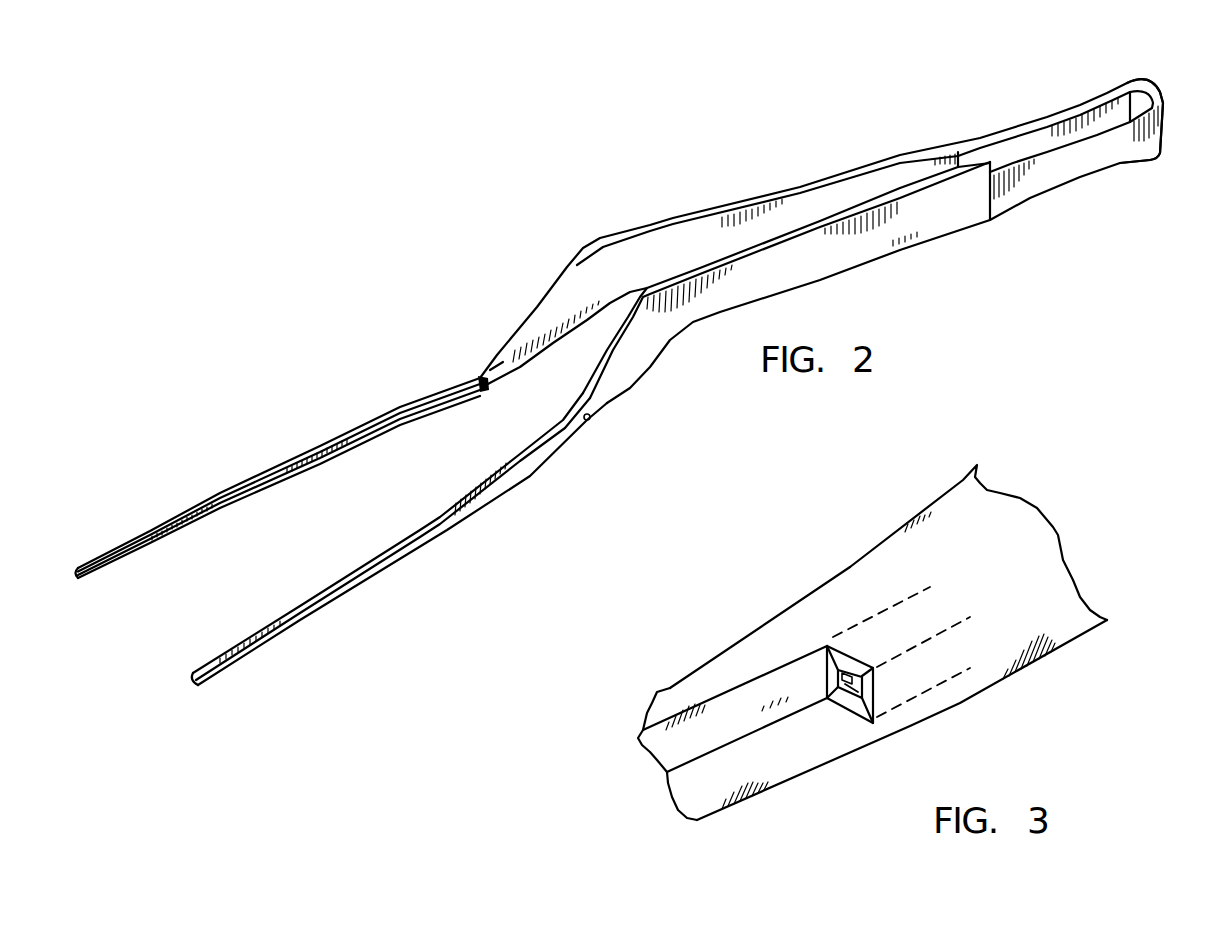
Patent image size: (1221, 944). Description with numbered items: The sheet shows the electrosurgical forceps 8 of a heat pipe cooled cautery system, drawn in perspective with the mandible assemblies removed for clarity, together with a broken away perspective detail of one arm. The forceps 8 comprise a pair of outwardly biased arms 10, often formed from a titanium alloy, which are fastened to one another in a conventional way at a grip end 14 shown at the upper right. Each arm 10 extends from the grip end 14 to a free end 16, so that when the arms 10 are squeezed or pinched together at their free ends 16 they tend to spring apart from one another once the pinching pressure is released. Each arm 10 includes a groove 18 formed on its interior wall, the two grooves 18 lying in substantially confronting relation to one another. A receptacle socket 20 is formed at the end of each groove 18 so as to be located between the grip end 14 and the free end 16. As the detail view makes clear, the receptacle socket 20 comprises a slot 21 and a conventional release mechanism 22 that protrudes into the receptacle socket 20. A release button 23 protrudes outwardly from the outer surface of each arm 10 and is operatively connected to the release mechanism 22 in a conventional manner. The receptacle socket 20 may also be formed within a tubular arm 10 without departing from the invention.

In FIG. 2, the forceps 8 is at (673, 219).
In FIG. 3, the forceps 8 is at (906, 528).
In FIG. 2, the arm 10 is at (339, 557).
In FIG. 3, the arm 10 is at (781, 693).
In FIG. 2, the grip end 14 is at (1157, 95).
In FIG. 2, the free end 16 is at (77, 568).
In FIG. 2, the groove 18 is at (208, 516).
In FIG. 3, the groove 18 is at (708, 722).
In FIG. 2, the receptacle socket 20 is at (479, 390).
In FIG. 3, the receptacle socket 20 is at (880, 688).
In FIG. 3, the slot 21 is at (853, 697).
In FIG. 3, the release mechanism 22 is at (840, 677).
In FIG. 2, the release button 23 is at (596, 420).